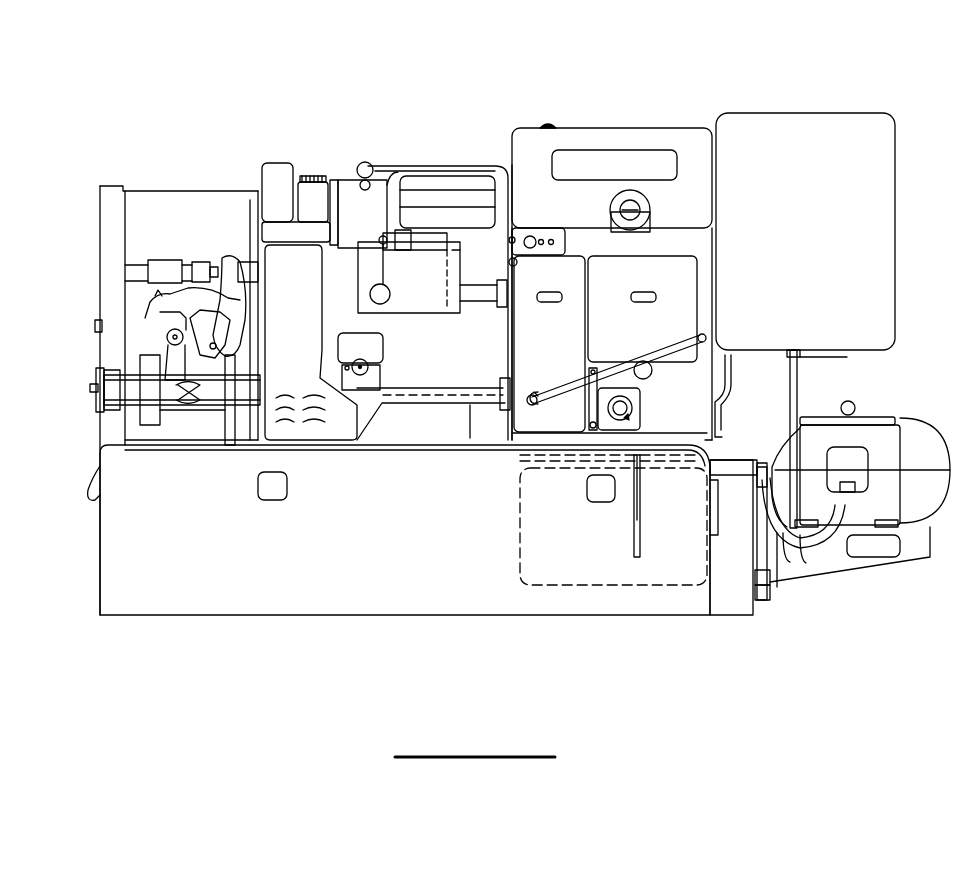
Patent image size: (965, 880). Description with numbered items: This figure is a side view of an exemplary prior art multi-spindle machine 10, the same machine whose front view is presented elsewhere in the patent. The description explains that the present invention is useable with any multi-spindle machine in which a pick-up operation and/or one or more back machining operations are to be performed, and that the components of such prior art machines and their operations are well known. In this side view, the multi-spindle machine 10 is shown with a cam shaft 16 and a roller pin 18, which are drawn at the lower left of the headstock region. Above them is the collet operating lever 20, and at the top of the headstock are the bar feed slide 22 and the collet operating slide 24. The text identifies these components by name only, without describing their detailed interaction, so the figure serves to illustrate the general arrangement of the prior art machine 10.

The multi-spindle machine 10 is at (474, 116).
The cam shaft 16 is at (95, 388).
The roller pin 18 is at (98, 325).
The collet operating lever 20 is at (170, 338).
The bar feed slide 22 is at (165, 262).
The collet operating slide 24 is at (218, 262).